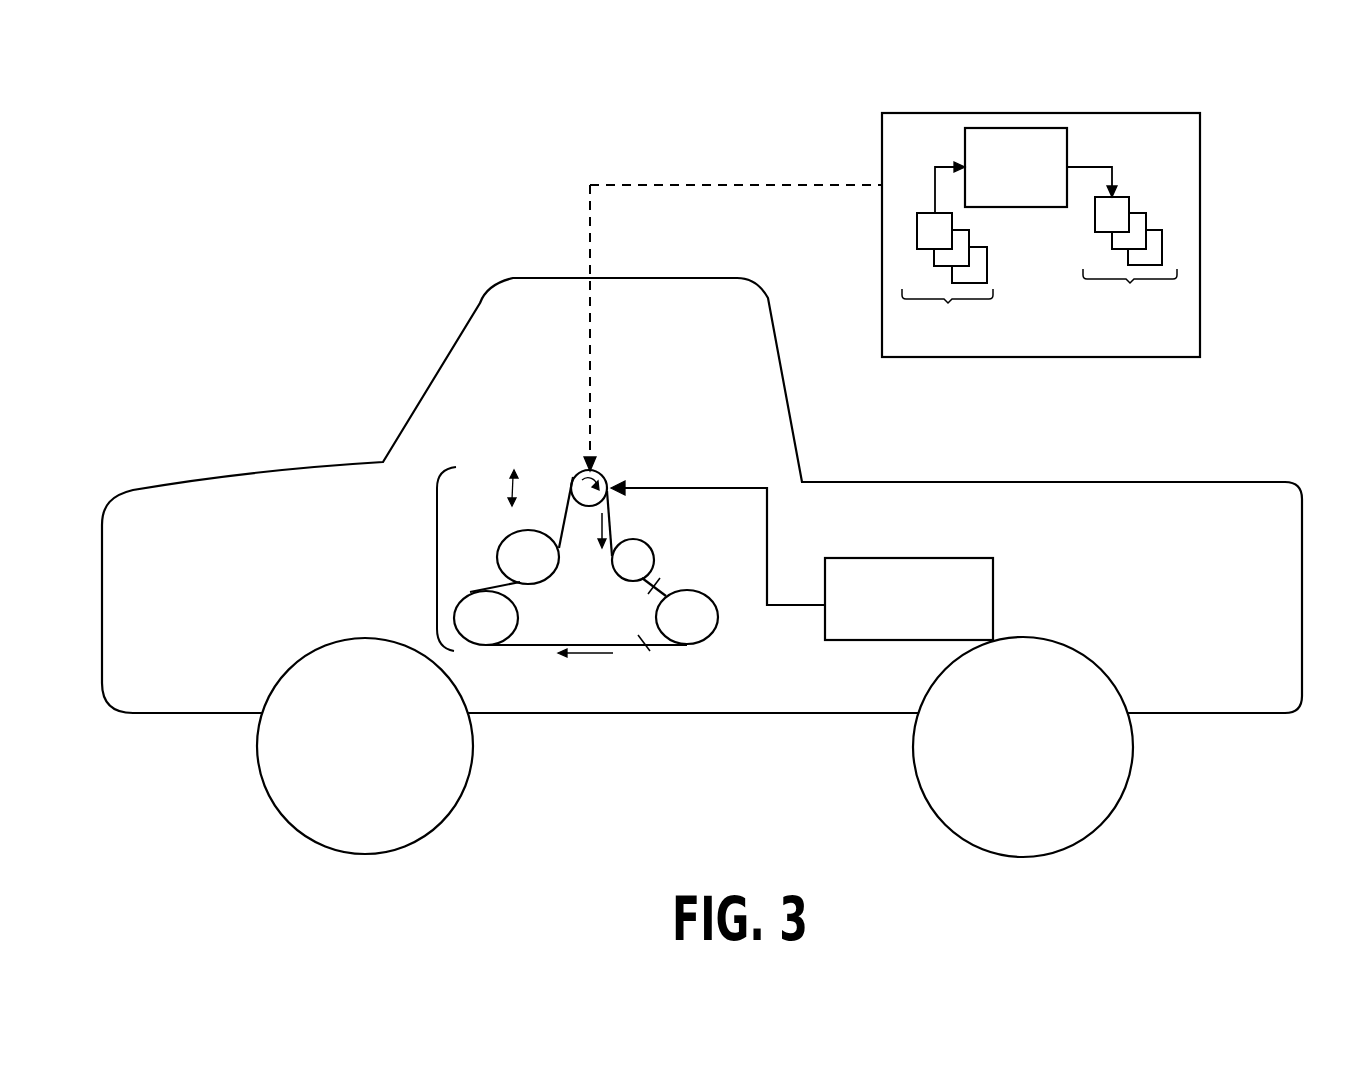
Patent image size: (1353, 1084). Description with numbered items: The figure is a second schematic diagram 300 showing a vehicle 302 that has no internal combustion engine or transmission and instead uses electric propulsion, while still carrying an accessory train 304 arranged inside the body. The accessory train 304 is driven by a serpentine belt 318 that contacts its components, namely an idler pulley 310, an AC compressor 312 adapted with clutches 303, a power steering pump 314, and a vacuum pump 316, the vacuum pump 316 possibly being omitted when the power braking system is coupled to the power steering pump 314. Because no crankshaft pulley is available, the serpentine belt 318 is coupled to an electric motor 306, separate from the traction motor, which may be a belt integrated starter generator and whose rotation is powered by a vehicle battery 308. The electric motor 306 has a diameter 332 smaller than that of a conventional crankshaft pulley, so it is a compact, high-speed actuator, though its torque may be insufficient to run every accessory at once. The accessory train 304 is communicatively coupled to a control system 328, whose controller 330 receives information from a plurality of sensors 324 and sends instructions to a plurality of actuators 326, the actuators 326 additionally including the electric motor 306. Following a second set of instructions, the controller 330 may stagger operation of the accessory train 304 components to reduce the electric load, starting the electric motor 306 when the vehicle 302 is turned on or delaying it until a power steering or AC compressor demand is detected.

The second schematic diagram 300 is at (215, 100).
The vehicle 302 is at (368, 237).
The clutches 303 is at (649, 588).
The accessory train 304 is at (437, 557).
The electric motor 306 is at (574, 479).
The vehicle battery 308 is at (925, 612).
The idler pulley 310 is at (640, 542).
The AC compressor 312 is at (705, 630).
The power steering pump 314 is at (503, 630).
The vacuum pump 316 is at (545, 570).
The serpentine belt 318 is at (515, 645).
The sensors 324 is at (947, 258).
The actuators 326 is at (1122, 251).
The control system 328 is at (928, 112).
The controller 330 is at (1032, 180).
The diameter 332 is at (510, 500).